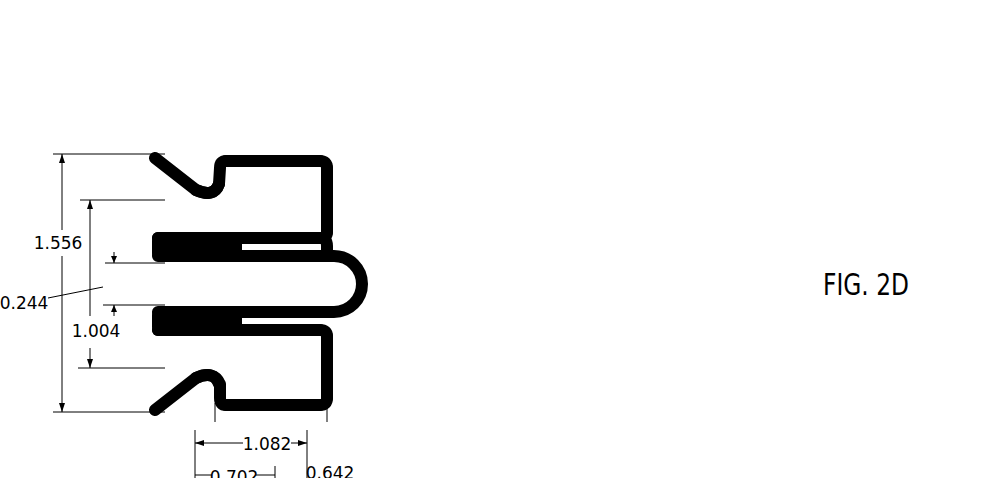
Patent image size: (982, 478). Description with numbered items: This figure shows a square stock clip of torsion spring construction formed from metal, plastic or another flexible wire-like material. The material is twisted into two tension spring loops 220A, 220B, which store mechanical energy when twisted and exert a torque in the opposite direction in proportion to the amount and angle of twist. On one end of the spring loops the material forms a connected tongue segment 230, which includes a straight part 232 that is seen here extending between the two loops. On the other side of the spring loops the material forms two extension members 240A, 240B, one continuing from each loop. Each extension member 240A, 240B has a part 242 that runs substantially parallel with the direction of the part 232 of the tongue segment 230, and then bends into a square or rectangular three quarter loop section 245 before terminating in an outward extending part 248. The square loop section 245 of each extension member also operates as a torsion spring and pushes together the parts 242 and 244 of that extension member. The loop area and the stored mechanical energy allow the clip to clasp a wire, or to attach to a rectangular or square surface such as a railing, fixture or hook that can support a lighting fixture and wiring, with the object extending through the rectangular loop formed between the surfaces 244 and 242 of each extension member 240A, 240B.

The tension spring loop 220A is at (160, 323).
The tension spring loop 220B is at (154, 236).
The tongue segment 230 is at (370, 288).
The part of the tongue segment 232 is at (162, 458).
The extension member 240A is at (263, 303).
The extension member 240B is at (240, 234).
The part of the extension member 242 is at (288, 234).
The part of the extension member 244 is at (255, 234).
The square three quarter loop section 245 is at (330, 195).
The outward extending part 248 is at (190, 376).